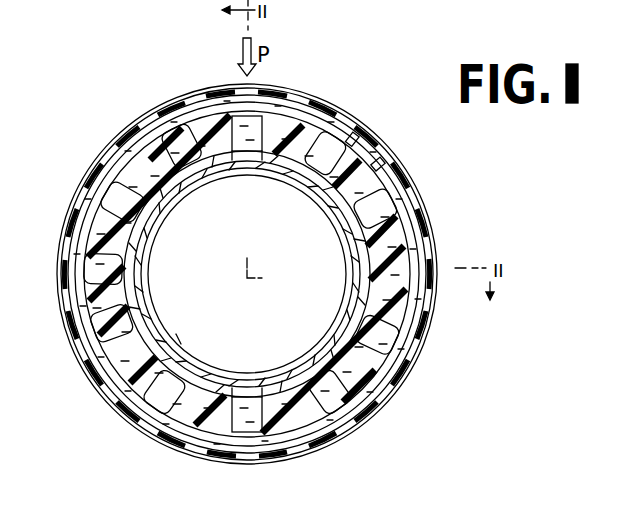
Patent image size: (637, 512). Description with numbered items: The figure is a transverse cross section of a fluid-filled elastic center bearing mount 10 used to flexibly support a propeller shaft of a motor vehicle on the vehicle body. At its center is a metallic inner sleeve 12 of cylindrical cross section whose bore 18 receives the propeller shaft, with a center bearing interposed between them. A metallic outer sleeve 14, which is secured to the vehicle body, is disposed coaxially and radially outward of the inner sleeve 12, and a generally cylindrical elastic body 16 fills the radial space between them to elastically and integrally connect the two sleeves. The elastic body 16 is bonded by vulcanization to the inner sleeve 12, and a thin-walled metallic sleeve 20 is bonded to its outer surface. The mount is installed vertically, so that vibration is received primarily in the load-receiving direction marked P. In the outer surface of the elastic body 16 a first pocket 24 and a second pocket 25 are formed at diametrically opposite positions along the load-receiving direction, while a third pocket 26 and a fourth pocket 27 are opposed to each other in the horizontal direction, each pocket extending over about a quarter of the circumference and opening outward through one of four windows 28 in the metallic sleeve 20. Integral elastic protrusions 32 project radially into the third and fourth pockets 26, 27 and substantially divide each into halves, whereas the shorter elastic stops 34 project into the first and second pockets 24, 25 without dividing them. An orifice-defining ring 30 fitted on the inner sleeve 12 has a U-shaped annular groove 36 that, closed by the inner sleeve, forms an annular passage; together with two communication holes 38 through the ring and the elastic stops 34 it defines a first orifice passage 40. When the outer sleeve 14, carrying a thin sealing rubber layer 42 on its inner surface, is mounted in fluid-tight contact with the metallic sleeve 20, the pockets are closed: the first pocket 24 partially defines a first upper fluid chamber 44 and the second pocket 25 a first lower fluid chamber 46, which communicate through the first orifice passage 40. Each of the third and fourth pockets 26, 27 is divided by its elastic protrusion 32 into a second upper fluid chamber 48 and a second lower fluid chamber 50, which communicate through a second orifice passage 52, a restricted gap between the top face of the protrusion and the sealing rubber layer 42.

The fluid-filled elastic center bearing mount 10 is at (372, 77).
The inner sleeve 12 is at (170, 210).
The outer sleeve 14 is at (420, 325).
The elastic body 16 is at (128, 400).
The bore 18 is at (180, 336).
The metallic sleeve 20 is at (352, 150).
The first pocket 24 is at (182, 128).
The second pocket 25 is at (330, 430).
The third pocket 26 is at (106, 186).
The fourth pocket 27 is at (386, 170).
The windows 28 is at (150, 128).
The orifice-defining ring 30 is at (102, 246).
The elastic protrusions 32 is at (92, 300).
The elastic stops 34 is at (290, 110).
The annular groove 36 is at (342, 232).
The communication holes 38 is at (249, 162).
The first orifice passage 40 is at (140, 292).
The sealing rubber layer 42 is at (292, 455).
The first upper fluid chamber 44 is at (218, 108).
The first lower fluid chamber 46 is at (215, 448).
The second upper fluid chamber 48 is at (122, 213).
The second lower fluid chamber 50 is at (106, 362).
The second orifice passage 52 is at (82, 270).